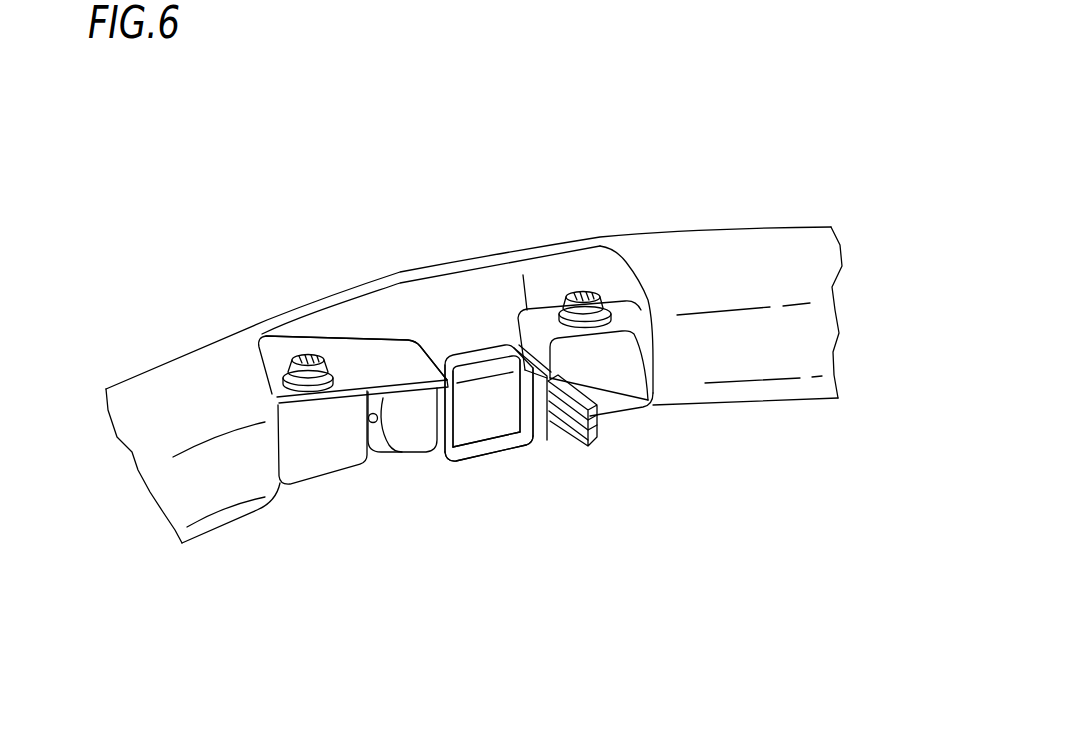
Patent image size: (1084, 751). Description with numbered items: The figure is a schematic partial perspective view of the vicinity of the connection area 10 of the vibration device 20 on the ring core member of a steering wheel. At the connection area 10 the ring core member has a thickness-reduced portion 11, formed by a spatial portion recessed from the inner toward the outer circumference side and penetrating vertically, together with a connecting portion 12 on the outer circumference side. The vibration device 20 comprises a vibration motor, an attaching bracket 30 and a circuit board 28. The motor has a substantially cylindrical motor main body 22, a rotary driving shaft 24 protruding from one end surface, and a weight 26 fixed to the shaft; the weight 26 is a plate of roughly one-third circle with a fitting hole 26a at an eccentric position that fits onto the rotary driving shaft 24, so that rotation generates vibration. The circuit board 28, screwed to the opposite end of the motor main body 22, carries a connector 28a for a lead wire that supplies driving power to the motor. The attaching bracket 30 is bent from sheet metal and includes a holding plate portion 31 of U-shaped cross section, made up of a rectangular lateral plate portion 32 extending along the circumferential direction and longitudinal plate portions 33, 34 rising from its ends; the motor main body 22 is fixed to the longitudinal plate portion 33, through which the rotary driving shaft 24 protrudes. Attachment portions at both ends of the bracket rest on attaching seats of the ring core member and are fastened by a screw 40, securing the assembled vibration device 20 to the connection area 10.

The connection area 10 is at (402, 262).
The thickness-reduced portion 11 is at (350, 311).
The connecting portion 12 is at (532, 282).
The vibration device 20 is at (468, 482).
The motor main body 22 is at (507, 417).
The rotary driving shaft 24 is at (380, 455).
The weight 26 is at (424, 440).
The fitting hole 26a is at (407, 453).
The circuit board 28 is at (600, 432).
The connector 28a is at (580, 443).
The attaching bracket 30 is at (383, 337).
The holding plate portion 31 is at (477, 344).
The lateral plate portion 32 is at (497, 445).
The longitudinal plate portion 33 is at (448, 357).
The longitudinal plate portion 34 is at (513, 345).
The screw 40 is at (303, 356).